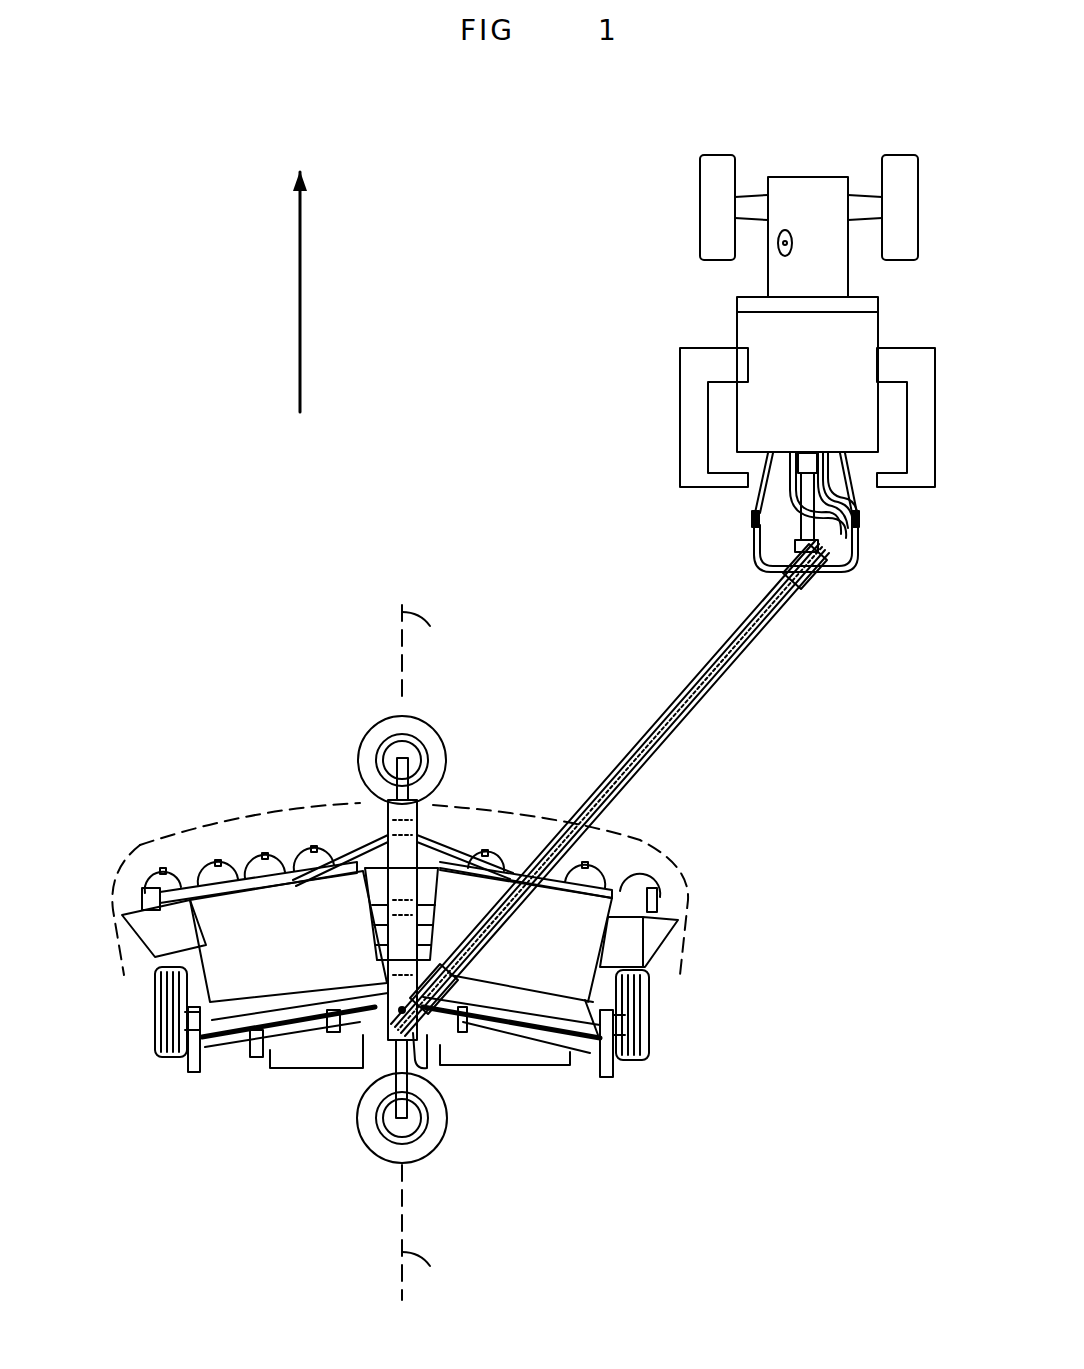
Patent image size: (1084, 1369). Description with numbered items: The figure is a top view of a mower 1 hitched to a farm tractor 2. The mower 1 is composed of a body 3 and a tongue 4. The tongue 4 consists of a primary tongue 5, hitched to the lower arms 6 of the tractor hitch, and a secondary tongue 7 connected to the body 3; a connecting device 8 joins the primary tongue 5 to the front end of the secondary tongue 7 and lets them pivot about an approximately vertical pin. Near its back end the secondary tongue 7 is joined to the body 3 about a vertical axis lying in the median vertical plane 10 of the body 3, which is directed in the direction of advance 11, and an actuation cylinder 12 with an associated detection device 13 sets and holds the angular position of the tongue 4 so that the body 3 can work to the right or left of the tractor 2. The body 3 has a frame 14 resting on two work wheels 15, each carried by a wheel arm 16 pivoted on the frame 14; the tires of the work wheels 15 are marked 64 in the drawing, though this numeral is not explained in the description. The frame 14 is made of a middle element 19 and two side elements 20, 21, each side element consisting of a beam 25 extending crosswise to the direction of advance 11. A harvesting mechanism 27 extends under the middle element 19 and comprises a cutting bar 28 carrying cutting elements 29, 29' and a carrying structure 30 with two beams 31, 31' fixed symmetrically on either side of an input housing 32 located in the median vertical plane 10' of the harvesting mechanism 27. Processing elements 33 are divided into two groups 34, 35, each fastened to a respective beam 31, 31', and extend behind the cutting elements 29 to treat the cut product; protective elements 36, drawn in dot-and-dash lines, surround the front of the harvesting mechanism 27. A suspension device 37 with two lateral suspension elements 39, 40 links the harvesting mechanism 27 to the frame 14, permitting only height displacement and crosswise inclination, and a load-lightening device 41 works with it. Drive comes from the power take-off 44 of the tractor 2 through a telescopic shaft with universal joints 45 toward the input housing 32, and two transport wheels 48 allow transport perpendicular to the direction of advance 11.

The mower 1 is at (252, 603).
The farm tractor 2 is at (713, 448).
The body 3 is at (704, 977).
The tongue 4 is at (748, 671).
The primary tongue 5 is at (842, 572).
The lower arms 6 is at (757, 500).
The secondary tongue 7 is at (682, 688).
The connecting device 8 is at (790, 573).
The median vertical plane of body 10 is at (447, 1233).
The median vertical plane of harvesting mechanism 10' is at (442, 652).
The direction of advance 11 is at (300, 264).
The actuation cylinder 12 is at (323, 1053).
The detection device 13 is at (428, 1058).
The frame 14 is at (222, 1068).
The work wheels 15 is at (160, 1058).
The wheel arm 16 is at (188, 1065).
The middle element 19 is at (450, 807).
The side element 20 is at (243, 1058).
The side element 21 is at (553, 1047).
The beam 25 is at (267, 1058).
The harvesting mechanism 27 is at (137, 820).
The cutting bar 28 is at (199, 865).
The cutting elements 29 is at (426, 838).
The cutting elements 29' is at (434, 828).
The carrying structure 30 is at (213, 903).
The beam 31 is at (260, 772).
The beam 31' is at (694, 823).
The input housing 32 is at (353, 843).
The processing elements 33 is at (618, 940).
The group of processing elements 34 is at (292, 950).
The group of processing elements 35 is at (578, 957).
The protective elements 36 is at (225, 825).
The suspension device 37 is at (468, 850).
The lateral suspension element 39 is at (313, 867).
The lateral suspension element 40 is at (470, 846).
The load-lightening device 41 is at (368, 922).
The power take-off 44 is at (800, 452).
The telescopic shaft with universal joints 45 is at (801, 540).
The transport wheels 48 is at (388, 737).
The tires 64 is at (645, 1095).